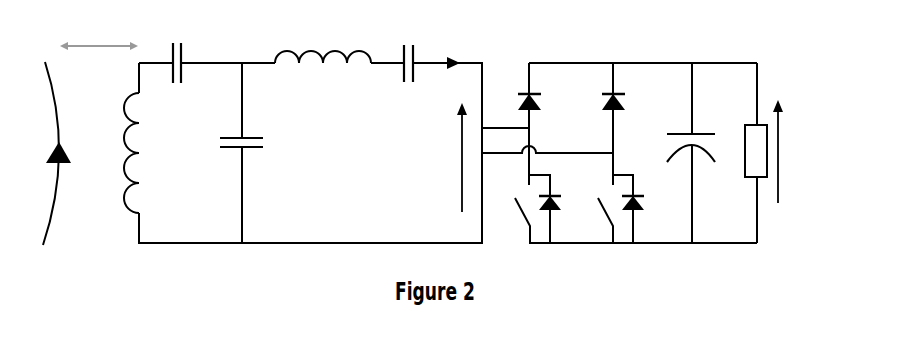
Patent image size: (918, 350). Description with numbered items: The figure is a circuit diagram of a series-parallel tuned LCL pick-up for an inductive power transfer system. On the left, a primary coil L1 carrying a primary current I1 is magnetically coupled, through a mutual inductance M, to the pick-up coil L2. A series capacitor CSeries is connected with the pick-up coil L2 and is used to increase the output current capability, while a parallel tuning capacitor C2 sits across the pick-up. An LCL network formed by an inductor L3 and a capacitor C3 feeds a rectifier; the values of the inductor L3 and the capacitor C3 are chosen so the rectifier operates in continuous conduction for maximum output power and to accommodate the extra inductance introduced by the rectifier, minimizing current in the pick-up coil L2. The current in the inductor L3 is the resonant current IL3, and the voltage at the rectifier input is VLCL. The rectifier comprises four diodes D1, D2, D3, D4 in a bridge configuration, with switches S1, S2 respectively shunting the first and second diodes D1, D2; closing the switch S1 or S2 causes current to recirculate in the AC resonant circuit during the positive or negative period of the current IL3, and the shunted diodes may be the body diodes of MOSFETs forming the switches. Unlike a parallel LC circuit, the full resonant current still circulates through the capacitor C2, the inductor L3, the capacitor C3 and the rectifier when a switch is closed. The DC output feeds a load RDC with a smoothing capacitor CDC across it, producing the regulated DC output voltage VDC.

The mutual inductance M is at (99, 29).
The primary inductance L1 is at (70, 153).
The primary current I1 is at (48, 130).
The series capacitor CSeries is at (193, 82).
The pick-up coil inductance L2 is at (152, 164).
The parallel tuning capacitor C2 is at (252, 153).
The LCL inductor L3 is at (323, 80).
The LCL capacitor C3 is at (412, 85).
The resonant current in L3 IL3 is at (449, 44).
The LCL network voltage VLCL is at (431, 157).
The first diode D1 is at (563, 188).
The second diode D2 is at (647, 188).
The third diode D3 is at (552, 87).
The fourth diode D4 is at (637, 87).
The first switch S1 is at (511, 221).
The second switch S2 is at (590, 221).
The smoothing capacitor CDC is at (708, 124).
The load RDC is at (734, 168).
The regulated DC output voltage VDC is at (807, 151).